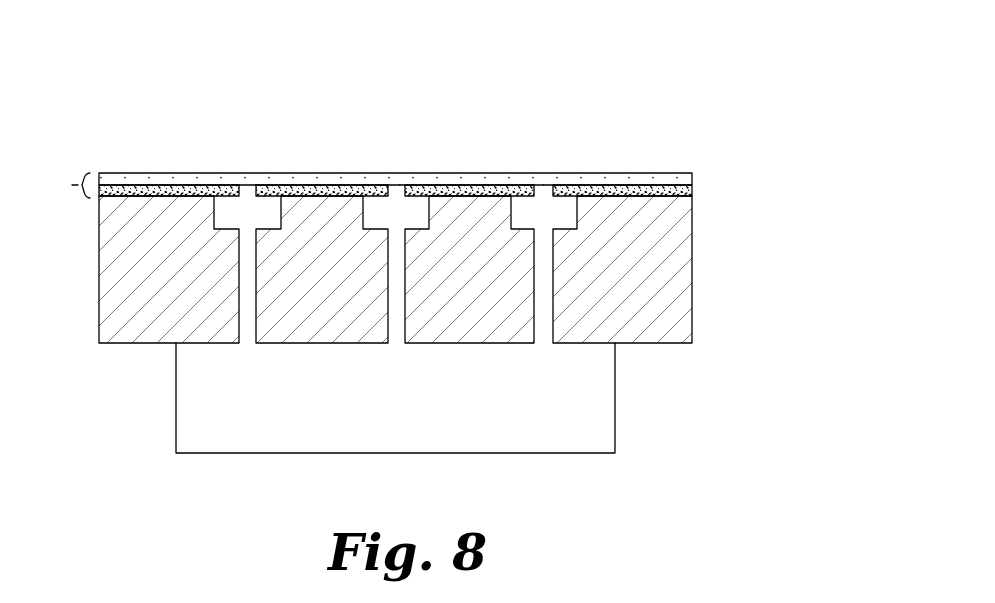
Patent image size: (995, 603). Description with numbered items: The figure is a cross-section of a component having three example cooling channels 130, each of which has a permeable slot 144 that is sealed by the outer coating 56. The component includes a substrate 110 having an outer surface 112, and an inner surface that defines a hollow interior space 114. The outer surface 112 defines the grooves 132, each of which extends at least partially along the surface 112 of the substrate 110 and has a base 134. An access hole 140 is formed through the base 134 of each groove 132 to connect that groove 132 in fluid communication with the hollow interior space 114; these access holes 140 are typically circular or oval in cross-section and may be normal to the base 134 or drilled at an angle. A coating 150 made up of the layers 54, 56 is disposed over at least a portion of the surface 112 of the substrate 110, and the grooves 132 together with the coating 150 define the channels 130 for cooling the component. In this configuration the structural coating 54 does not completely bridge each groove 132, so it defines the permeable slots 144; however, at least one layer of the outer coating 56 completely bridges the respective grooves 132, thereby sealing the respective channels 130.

The structural coating 54 is at (687, 190).
The outer coating 56 is at (142, 177).
The substrate 110 is at (673, 290).
The outer surface 112 is at (116, 197).
The hollow interior space 114 is at (588, 395).
The channel 130 is at (248, 190).
The groove 132 is at (324, 156).
The base 134 is at (567, 225).
The access hole 140 is at (250, 343).
The permeable slot 144 is at (237, 203).
The coating 150 is at (56, 185).